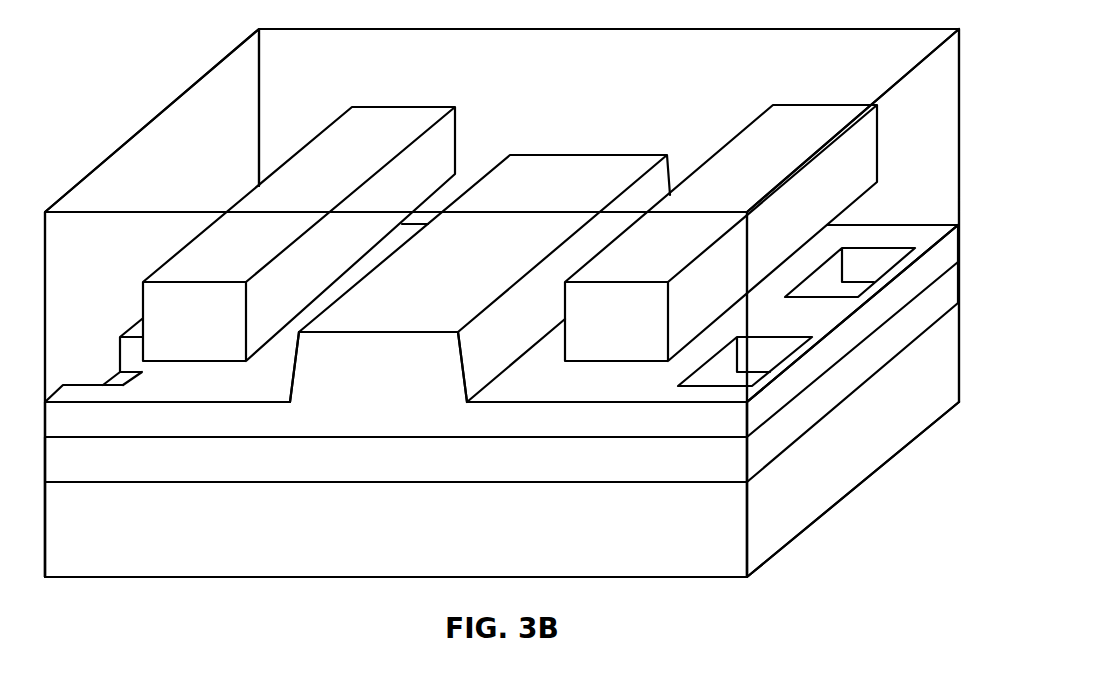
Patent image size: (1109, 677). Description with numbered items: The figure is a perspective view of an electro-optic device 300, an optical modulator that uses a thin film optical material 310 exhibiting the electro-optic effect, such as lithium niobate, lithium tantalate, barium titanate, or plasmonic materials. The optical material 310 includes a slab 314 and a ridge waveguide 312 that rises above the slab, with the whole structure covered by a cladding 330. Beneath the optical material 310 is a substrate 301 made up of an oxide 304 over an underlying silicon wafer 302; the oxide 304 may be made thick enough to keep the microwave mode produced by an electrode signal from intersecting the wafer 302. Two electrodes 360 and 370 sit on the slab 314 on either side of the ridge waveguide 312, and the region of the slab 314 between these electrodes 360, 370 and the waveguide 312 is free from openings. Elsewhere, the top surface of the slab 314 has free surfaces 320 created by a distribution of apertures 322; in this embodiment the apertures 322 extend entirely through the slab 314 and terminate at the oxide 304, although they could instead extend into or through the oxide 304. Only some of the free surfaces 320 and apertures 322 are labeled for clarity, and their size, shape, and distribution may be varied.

The electro-optic device 300 is at (147, 48).
The substrate 301 is at (853, 508).
The wafer 302 is at (430, 531).
The oxide 304 is at (430, 473).
The optical material 310 is at (387, 410).
The ridge waveguide 312 is at (442, 408).
The slab 314 is at (612, 432).
The free surfaces 320 is at (722, 370).
The apertures 322 is at (795, 352).
The cladding 330 is at (152, 117).
The electrode 360 is at (207, 323).
The electrode 370 is at (648, 331).